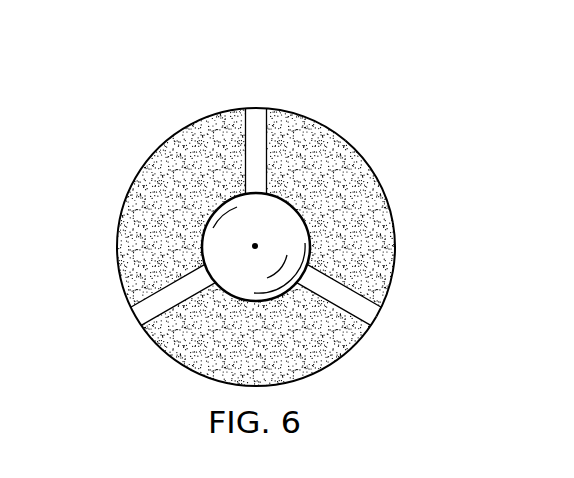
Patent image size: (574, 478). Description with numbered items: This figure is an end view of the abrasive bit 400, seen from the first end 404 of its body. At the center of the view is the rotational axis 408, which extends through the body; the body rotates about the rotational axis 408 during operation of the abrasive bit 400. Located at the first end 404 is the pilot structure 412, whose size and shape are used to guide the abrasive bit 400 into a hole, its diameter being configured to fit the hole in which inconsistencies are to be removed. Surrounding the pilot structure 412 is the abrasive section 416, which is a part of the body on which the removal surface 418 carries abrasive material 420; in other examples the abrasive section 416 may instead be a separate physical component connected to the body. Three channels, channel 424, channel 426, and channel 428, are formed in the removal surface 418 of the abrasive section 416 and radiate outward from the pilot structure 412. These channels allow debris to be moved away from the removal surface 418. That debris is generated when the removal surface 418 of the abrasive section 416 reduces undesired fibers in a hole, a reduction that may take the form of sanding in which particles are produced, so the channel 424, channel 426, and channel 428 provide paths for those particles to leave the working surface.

The abrasive bit 400 is at (372, 67).
The first end 404 is at (303, 218).
The rotational axis 408 is at (250, 246).
The pilot structure 412 is at (239, 218).
The abrasive section 416 is at (345, 162).
The removal surface 418 is at (312, 133).
The abrasive material 420 is at (362, 190).
The channel 424 is at (257, 123).
The channel 426 is at (148, 311).
The channel 428 is at (363, 310).